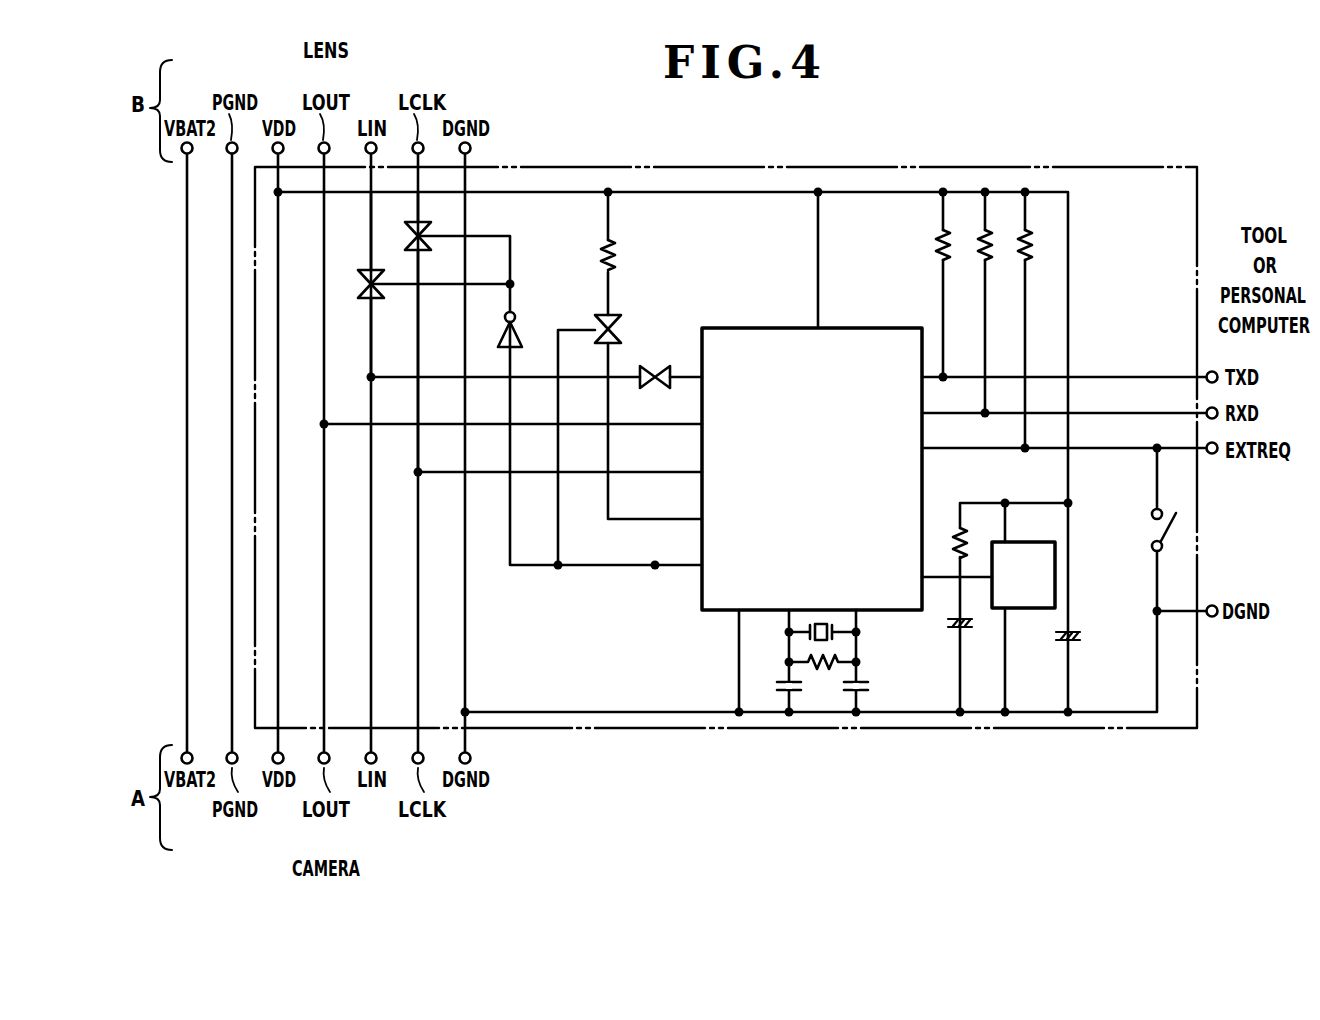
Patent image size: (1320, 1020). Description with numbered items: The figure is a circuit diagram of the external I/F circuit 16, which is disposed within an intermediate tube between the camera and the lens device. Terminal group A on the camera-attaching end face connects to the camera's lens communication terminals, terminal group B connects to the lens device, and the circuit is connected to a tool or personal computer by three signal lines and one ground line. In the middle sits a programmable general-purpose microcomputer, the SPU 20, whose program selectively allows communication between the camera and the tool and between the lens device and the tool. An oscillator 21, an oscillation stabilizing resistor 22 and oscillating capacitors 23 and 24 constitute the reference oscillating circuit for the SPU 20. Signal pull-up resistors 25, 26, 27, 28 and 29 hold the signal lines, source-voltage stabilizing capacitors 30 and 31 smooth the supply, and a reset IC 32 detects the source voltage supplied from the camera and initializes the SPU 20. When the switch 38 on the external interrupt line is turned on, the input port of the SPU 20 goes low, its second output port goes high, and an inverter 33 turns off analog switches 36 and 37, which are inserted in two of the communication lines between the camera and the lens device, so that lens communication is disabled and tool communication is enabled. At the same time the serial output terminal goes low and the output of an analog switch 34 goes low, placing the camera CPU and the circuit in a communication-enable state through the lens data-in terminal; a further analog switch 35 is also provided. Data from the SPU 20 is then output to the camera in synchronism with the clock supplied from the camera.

The external I/F circuit 16 is at (1013, 162).
The programmable general-purpose microcomputer (SPU) 20 is at (762, 327).
The oscillator 21 is at (832, 625).
The oscillation stabilizing resistor 22 is at (842, 658).
The oscillating capacitor 23 is at (870, 687).
The oscillating capacitor 24 is at (776, 690).
The signal pull-up resistor 25 is at (615, 257).
The signal pull-up resistor 26 is at (940, 262).
The signal pull-up resistor 27 is at (982, 262).
The signal pull-up resistor 28 is at (1022, 262).
The signal pull-up resistor 29 is at (955, 536).
The source-voltage stabilizing capacitor 30 is at (1081, 637).
The source-voltage stabilizing capacitor 31 is at (972, 624).
The reset IC 32 is at (1028, 609).
The inverter 33 is at (516, 331).
The analog switch 34 is at (658, 366).
The analog switch 35 is at (621, 327).
The analog switch 36 is at (404, 237).
The analog switch 37 is at (364, 299).
The switch 38 is at (1152, 515).